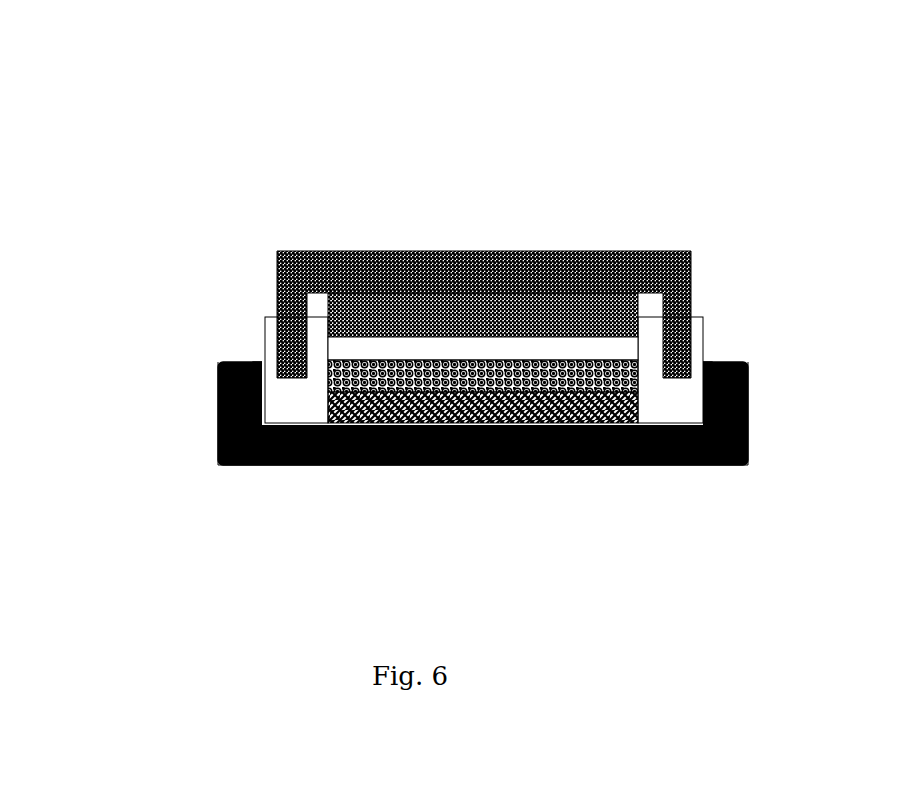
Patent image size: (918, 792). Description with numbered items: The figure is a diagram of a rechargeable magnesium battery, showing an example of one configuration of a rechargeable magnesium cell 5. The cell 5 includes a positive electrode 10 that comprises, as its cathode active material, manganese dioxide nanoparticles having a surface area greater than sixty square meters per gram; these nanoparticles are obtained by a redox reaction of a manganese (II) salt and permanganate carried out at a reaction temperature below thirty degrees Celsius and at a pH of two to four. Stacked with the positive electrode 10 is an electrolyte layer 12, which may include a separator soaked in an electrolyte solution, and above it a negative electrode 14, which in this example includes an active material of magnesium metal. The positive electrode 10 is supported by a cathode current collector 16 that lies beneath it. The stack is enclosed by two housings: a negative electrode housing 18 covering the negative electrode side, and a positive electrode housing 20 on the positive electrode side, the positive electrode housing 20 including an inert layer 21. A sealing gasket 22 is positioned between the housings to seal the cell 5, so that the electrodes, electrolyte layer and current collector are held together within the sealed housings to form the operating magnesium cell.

The rechargeable magnesium cell 5 is at (557, 124).
The positive electrode 10 is at (660, 433).
The electrolyte layer 12 is at (332, 336).
The negative electrode 14 is at (614, 314).
The cathode current collector 16 is at (323, 423).
The negative electrode housing 18 is at (474, 242).
The positive electrode housing 20 is at (231, 406).
The inert layer 21 is at (217, 479).
The sealing gasket 22 is at (684, 382).